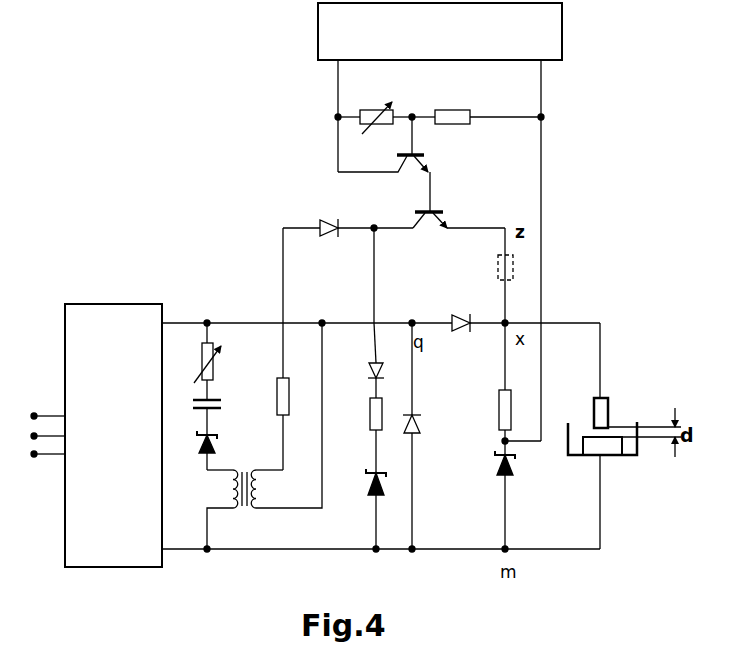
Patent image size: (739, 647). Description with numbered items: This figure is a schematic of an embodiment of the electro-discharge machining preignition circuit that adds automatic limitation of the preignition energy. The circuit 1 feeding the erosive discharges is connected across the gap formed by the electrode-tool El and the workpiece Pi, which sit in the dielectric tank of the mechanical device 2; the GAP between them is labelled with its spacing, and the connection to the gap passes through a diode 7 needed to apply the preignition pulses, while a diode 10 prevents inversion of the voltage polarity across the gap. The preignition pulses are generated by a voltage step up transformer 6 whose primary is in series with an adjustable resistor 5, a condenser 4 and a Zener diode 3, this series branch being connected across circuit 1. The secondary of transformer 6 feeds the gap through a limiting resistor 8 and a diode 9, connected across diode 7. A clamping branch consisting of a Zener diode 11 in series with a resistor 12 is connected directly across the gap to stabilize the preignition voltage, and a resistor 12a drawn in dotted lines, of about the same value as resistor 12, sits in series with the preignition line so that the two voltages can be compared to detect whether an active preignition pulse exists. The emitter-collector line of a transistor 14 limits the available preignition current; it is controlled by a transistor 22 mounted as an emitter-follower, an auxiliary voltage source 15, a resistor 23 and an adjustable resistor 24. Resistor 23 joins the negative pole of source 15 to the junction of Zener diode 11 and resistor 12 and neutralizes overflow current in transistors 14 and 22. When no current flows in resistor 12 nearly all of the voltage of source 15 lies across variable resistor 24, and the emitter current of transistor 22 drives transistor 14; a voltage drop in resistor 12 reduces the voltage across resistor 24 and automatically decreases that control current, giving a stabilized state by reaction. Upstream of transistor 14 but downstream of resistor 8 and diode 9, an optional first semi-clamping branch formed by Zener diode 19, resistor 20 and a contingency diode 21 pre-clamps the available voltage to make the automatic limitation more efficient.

The circuit feeding the erosive discharges 1 is at (108, 437).
The mechanical device for electro-discharge machining 2 is at (637, 423).
The Zener diode 3 is at (217, 450).
The condenser 4 is at (215, 415).
The adjustable resistor 5 is at (214, 361).
The voltage step up transformer 6 is at (261, 436).
The diode 7 is at (455, 313).
The limiting resistor 8 is at (291, 349).
The diode 9 is at (328, 240).
The diode 10 is at (424, 436).
The Zener diode 11 is at (492, 500).
The resistor 12 is at (505, 389).
The complementary resistor 12a is at (513, 268).
The transistor 14 is at (439, 235).
The auxiliary voltage source 15 is at (440, 31).
The Zener diode 19 is at (362, 509).
The resistor 20 is at (360, 435).
The diode 21 is at (362, 380).
The transistor 22 is at (396, 164).
The resistor 23 is at (476, 106).
The adjustable resistor 24 is at (375, 112).
The electrode-tool El is at (602, 411).
The workpiece Pi is at (610, 449).
The spark gap GAP is at (598, 430).